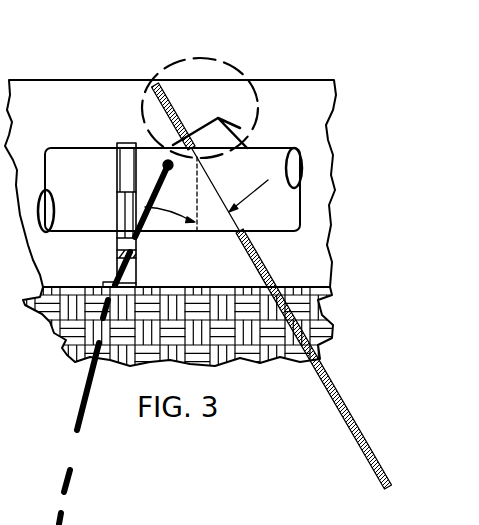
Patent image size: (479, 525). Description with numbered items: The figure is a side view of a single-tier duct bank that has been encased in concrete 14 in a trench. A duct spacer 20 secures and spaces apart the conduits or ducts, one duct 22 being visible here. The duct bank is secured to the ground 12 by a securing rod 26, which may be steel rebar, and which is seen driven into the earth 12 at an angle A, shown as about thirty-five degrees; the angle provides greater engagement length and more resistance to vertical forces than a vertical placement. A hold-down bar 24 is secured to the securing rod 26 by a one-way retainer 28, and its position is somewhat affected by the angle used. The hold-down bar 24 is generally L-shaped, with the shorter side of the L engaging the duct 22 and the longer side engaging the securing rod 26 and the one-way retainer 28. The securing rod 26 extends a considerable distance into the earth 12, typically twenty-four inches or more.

The ground 12 is at (97, 347).
The concrete 14 is at (312, 128).
The duct spacer 20 is at (127, 142).
The duct 22 is at (91, 202).
The hold-down bar 24 is at (240, 128).
The securing rod 26 is at (372, 469).
The one-way retainer 28 is at (196, 128).